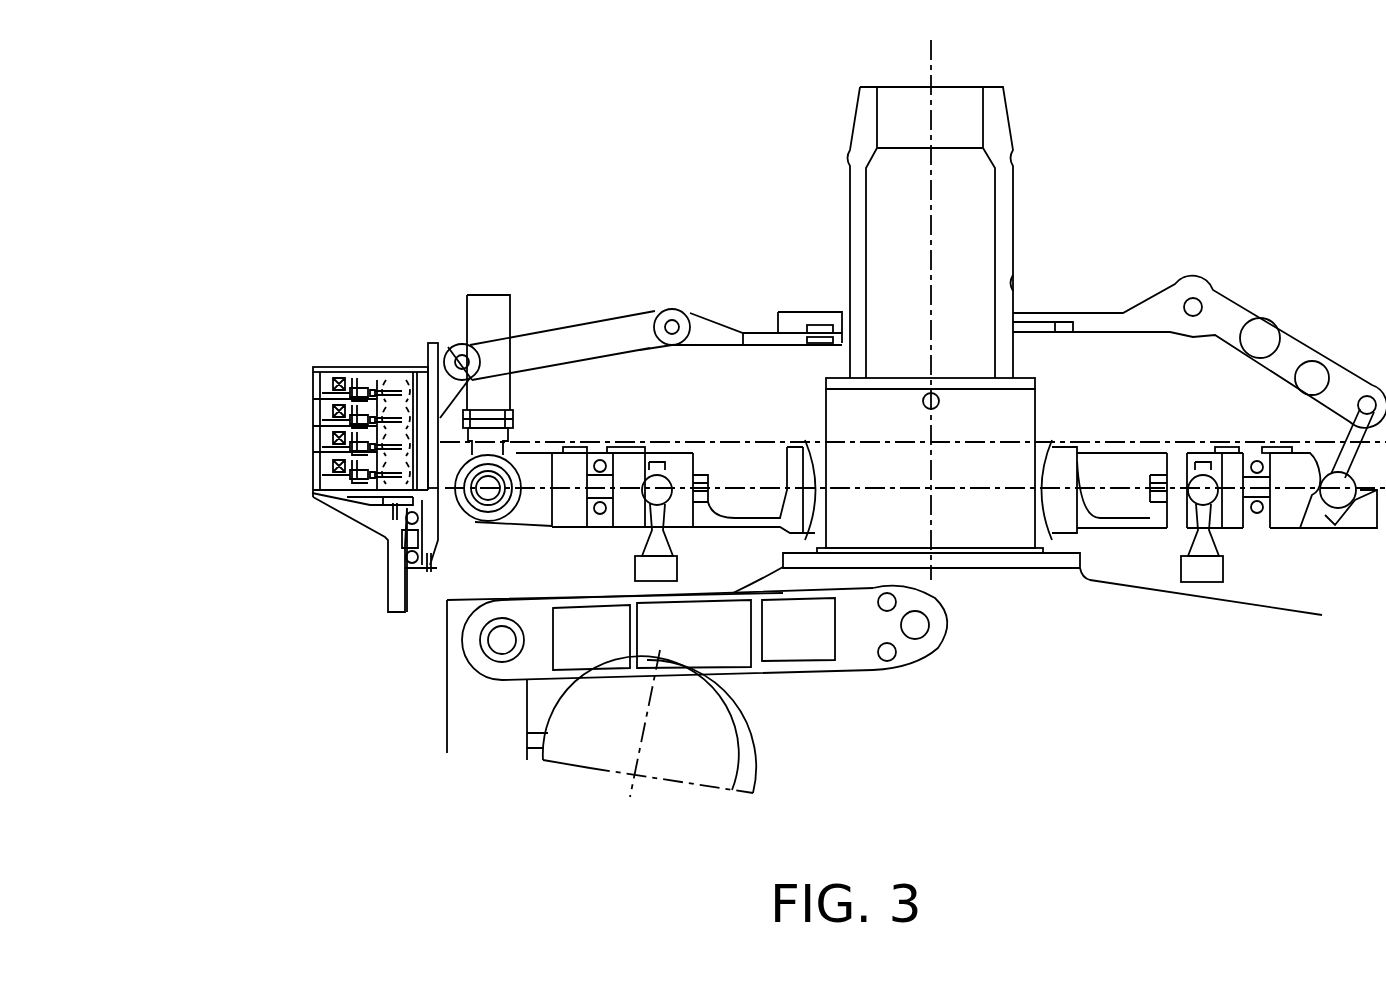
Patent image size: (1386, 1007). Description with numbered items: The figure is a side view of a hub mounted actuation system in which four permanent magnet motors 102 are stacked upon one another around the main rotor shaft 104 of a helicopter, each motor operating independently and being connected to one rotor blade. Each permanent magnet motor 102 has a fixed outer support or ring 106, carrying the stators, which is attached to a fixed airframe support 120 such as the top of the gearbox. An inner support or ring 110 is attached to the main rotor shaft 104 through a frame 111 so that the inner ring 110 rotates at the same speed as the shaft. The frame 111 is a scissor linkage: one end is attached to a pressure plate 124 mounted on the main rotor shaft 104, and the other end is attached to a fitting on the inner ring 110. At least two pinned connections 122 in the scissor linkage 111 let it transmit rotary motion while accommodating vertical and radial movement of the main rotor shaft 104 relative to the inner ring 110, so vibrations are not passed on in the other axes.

The permanent magnet motor 102 is at (310, 435).
The main rotor shaft 104 is at (850, 118).
The fixed outer support or ring 106 is at (310, 428).
The inner support or ring 110 is at (412, 377).
The frame 111 is at (583, 322).
The fixed airframe support 120 is at (398, 612).
The pinned connections 122 is at (458, 353).
The pressure plate 124 is at (806, 312).